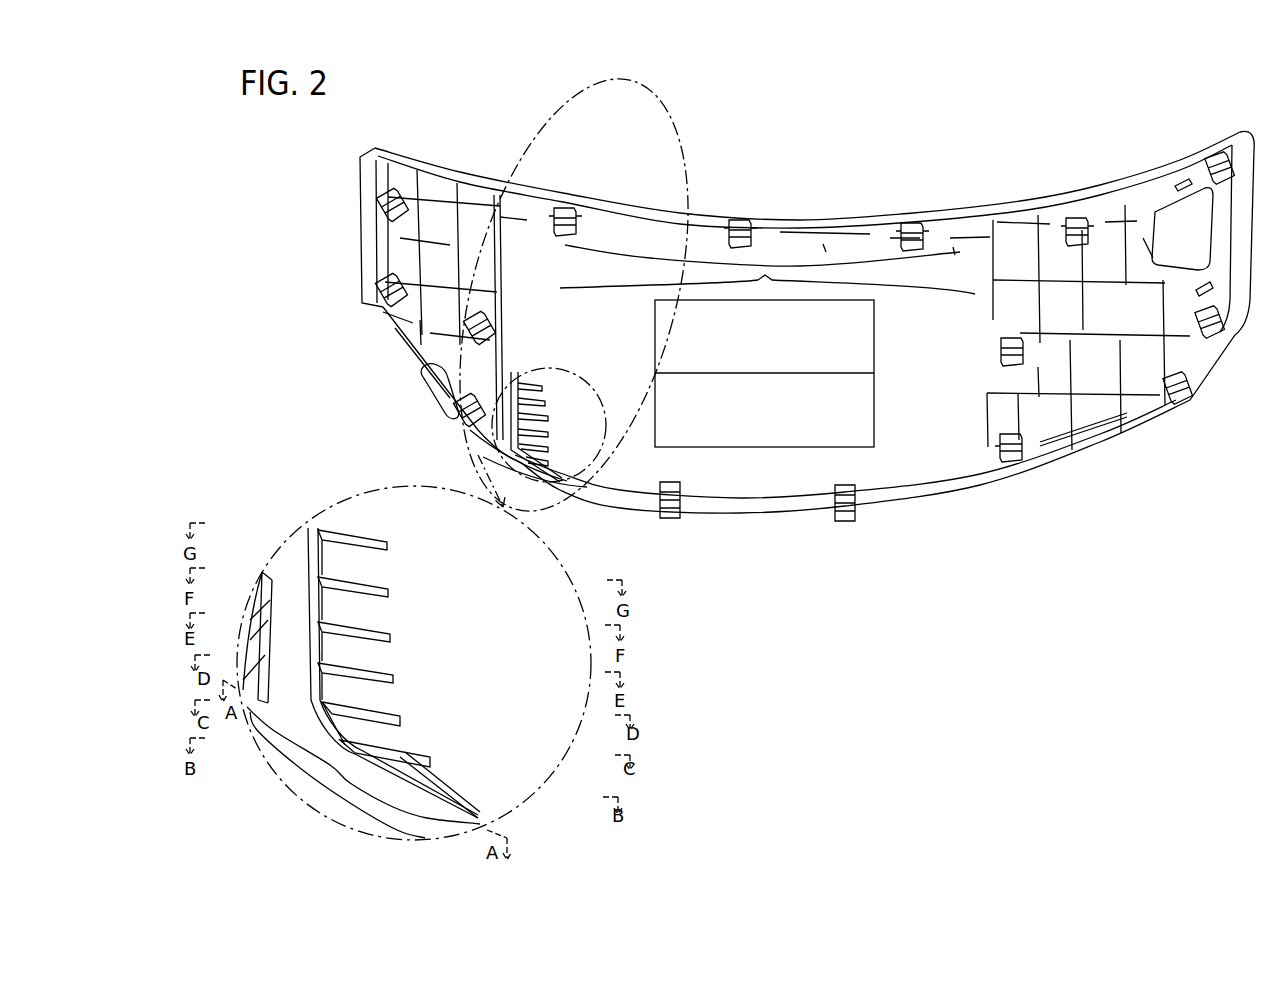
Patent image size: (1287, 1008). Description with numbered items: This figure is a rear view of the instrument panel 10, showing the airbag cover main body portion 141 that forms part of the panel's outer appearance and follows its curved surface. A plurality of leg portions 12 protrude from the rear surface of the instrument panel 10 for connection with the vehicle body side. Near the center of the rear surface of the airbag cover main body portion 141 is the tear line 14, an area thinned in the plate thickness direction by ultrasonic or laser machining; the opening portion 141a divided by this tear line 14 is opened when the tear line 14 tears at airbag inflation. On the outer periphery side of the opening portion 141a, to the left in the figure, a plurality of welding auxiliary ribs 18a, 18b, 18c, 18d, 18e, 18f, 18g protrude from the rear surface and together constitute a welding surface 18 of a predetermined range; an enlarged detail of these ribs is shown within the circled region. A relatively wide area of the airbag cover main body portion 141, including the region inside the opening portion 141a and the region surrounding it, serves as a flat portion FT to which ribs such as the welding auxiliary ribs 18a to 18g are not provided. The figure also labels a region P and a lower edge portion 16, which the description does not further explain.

The instrument panel 10 is at (1130, 487).
The leg portions 12 is at (575, 218).
The tear line 14 is at (880, 408).
The airbag cover main body portion 141 is at (705, 245).
The opening portion 141a is at (748, 425).
The lower edge portion 16 is at (513, 787).
The welding surface 18 is at (548, 372).
The welding auxiliary rib 18a is at (425, 803).
The welding auxiliary rib 18b is at (430, 757).
The welding auxiliary rib 18c is at (400, 716).
The welding auxiliary rib 18d is at (393, 675).
The welding auxiliary rib 18e is at (390, 634).
The welding auxiliary rib 18f is at (385, 590).
The welding auxiliary rib 18g is at (385, 540).
The region P is at (660, 108).
The flat portion FT is at (765, 262).